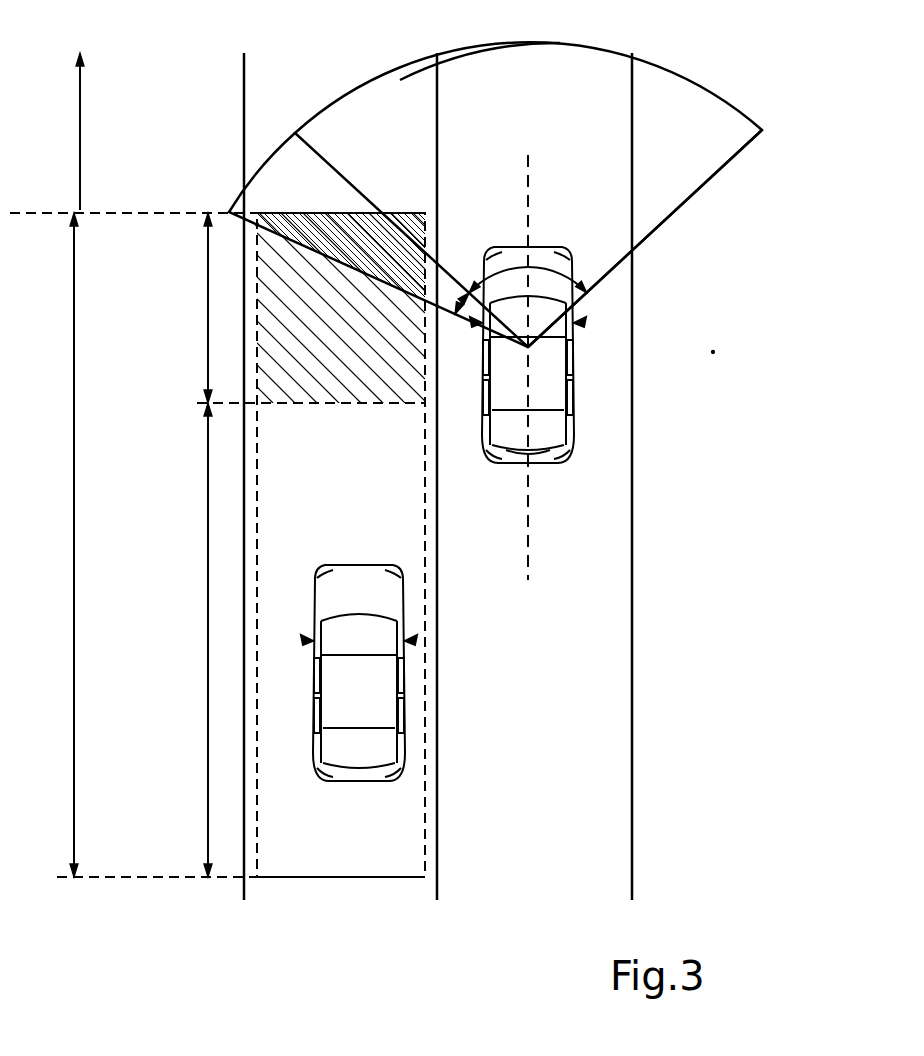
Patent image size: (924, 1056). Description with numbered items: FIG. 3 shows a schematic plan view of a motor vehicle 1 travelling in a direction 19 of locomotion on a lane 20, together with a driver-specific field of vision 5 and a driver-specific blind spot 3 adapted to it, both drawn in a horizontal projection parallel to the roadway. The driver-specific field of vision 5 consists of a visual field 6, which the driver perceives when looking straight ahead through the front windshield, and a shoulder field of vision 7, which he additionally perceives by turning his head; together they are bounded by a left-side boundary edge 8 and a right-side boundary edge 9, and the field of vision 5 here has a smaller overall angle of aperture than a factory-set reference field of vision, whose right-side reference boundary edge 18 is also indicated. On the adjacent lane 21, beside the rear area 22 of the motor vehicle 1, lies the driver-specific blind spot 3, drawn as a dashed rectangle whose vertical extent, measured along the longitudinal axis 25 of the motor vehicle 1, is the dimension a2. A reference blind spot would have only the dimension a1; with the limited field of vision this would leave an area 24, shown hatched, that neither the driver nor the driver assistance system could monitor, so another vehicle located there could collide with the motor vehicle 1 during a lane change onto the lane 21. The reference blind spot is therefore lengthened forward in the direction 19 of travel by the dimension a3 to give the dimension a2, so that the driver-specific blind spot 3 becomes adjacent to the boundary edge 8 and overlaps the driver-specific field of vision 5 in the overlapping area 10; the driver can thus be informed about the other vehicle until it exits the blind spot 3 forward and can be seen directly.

The motor vehicle 1 is at (575, 382).
The driver-specific blind spot 3 is at (425, 755).
The driver-specific field of vision 5 is at (750, 97).
The visual field 6 is at (405, 85).
The shoulder field of vision 7 is at (277, 165).
The left-side boundary edge 8 is at (330, 262).
The right-side boundary edge 9 is at (684, 207).
The overlapping area 10 is at (257, 228).
The right-side reference boundary edge 18 is at (715, 356).
The direction of locomotion 19 is at (83, 140).
The lane 20 is at (632, 712).
The adjacent lane 21 is at (244, 92).
The rear area 22 is at (541, 470).
The area 24 is at (338, 405).
The longitudinal axis 25 is at (532, 206).
The dimension a1 is at (208, 652).
The dimension a2 is at (74, 578).
The dimension a3 is at (208, 330).